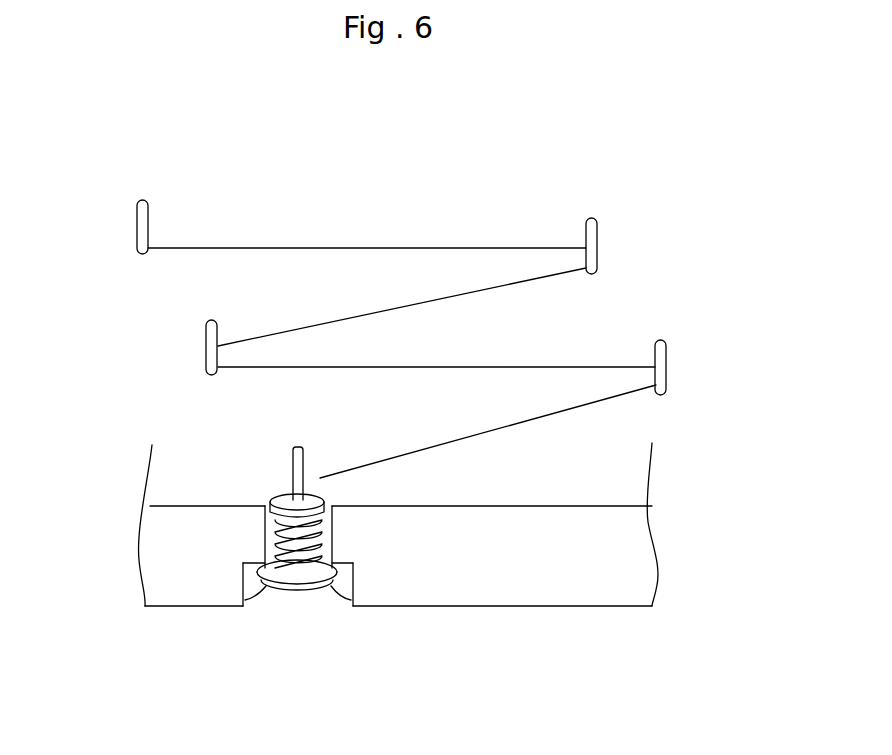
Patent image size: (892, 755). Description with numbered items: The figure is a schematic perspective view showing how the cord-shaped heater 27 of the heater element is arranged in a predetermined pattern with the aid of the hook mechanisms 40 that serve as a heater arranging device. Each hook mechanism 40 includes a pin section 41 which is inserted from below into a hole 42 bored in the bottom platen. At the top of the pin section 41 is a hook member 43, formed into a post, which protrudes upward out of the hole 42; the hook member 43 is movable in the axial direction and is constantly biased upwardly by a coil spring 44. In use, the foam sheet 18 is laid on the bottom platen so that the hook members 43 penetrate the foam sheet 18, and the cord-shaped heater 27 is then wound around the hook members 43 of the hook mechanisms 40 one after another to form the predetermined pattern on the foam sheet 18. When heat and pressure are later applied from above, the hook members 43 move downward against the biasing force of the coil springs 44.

The foam sheet 18 is at (546, 580).
The cord-shaped heater 27 is at (598, 403).
The hook mechanism 40 is at (662, 322).
The pin section 41 is at (303, 580).
The hole 42 is at (262, 592).
The hook member 43 is at (292, 470).
The coil spring 44 is at (141, 200).